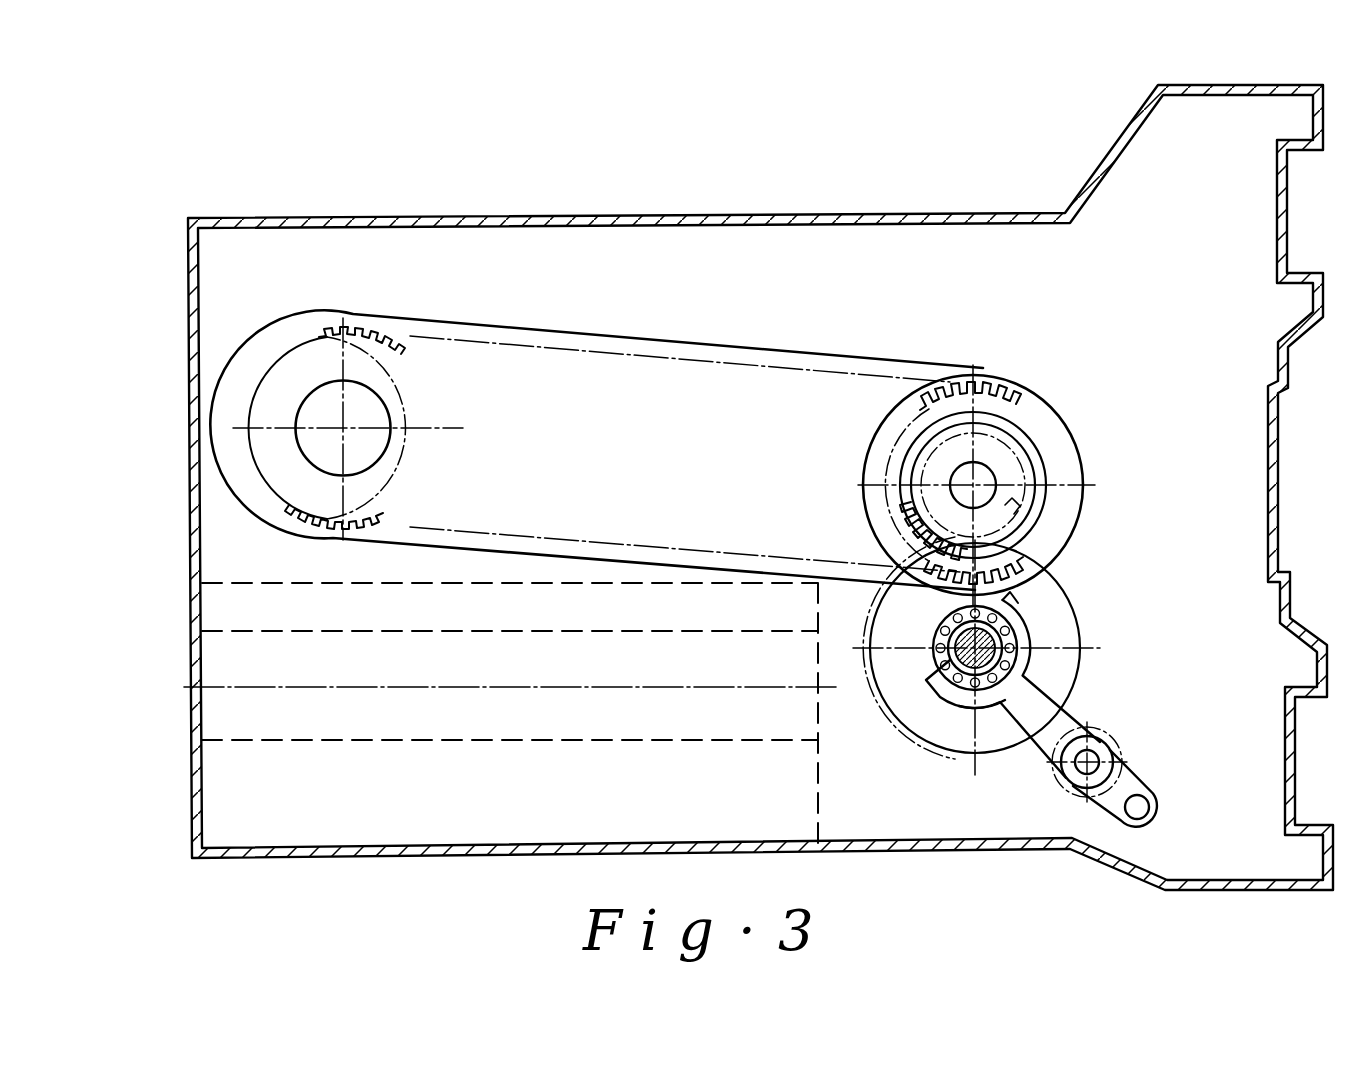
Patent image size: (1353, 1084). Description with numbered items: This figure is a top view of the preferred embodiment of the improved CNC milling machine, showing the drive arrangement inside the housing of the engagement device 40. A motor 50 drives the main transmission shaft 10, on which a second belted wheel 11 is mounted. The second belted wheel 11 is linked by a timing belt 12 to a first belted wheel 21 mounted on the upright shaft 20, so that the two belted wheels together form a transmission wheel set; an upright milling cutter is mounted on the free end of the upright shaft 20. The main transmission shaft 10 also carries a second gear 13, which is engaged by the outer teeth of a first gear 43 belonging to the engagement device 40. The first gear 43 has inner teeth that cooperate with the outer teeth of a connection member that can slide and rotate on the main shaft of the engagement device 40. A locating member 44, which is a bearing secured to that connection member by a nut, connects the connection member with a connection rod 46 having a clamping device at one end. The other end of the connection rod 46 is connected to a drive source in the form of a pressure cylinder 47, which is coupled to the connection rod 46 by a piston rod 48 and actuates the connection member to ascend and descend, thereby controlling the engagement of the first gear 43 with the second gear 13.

The main transmission shaft 10 is at (980, 473).
The second belted wheel 11 is at (957, 385).
The timing belt 12 is at (432, 328).
The second gear 13 is at (930, 522).
The upright shaft 20 is at (316, 447).
The first belted wheel 21 is at (282, 372).
The engagement device 40 is at (1150, 668).
The first gear 43 is at (1058, 578).
The locating member 44 is at (942, 697).
The connection rod 46 is at (987, 712).
The pressure cylinder 47 is at (1122, 757).
The piston rod 48 is at (1077, 775).
The motor 50 is at (1045, 462).